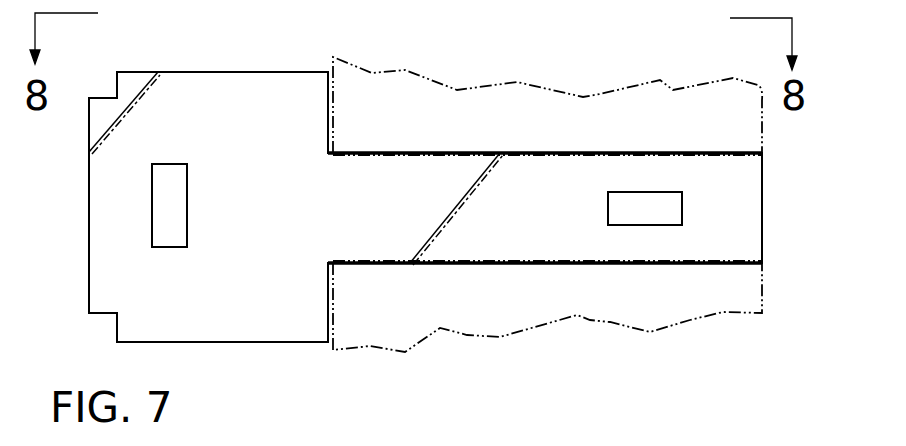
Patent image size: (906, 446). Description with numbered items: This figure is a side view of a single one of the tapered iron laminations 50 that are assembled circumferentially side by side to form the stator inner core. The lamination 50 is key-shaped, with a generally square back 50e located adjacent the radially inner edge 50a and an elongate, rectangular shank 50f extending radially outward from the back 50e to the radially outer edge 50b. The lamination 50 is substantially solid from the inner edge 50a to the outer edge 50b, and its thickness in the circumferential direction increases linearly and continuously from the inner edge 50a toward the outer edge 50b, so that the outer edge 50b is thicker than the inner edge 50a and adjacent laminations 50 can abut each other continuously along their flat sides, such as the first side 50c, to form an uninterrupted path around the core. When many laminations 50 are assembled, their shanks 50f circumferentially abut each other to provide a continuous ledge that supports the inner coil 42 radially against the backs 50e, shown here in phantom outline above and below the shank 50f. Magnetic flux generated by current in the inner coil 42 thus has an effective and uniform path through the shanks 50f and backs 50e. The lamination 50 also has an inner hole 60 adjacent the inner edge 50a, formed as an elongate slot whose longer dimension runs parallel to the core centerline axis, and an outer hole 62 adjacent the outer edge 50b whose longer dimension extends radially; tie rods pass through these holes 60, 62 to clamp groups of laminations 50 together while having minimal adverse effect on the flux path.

The lamination 50 is at (216, 70).
The radially inner edge 50a is at (89, 218).
The radially outer edge 50b is at (763, 205).
The first circumferentially opposite side 50c is at (270, 322).
The back 50e is at (166, 318).
The shank 50f is at (512, 242).
The inner hole 60 is at (152, 181).
The outer hole 62 is at (682, 210).
The inner coil 42 is at (765, 132).